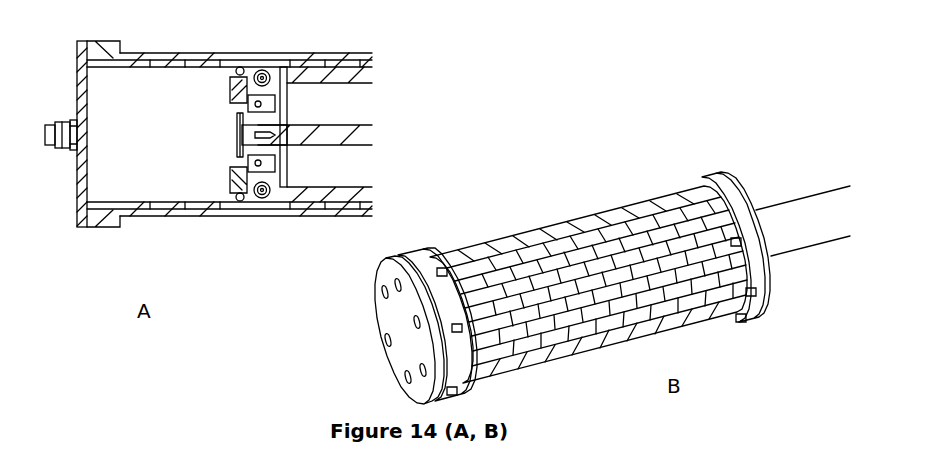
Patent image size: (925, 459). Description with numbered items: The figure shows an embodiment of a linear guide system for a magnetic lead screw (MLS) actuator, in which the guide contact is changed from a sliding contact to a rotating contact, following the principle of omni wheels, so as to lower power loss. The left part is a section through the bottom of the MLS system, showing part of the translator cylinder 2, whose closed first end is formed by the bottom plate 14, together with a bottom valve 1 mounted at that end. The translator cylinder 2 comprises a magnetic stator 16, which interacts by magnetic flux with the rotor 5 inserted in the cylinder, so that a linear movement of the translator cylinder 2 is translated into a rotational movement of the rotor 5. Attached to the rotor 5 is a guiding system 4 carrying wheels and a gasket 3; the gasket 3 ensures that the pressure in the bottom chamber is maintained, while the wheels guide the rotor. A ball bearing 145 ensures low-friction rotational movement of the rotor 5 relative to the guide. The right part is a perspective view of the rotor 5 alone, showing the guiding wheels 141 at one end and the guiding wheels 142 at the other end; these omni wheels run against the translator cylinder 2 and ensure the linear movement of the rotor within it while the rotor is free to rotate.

The bottom valve 1 is at (62, 153).
The translator cylinder 2 is at (155, 215).
The gasket 3 is at (238, 198).
The guiding system 4 is at (235, 113).
The rotor 5 is at (362, 77).
The bottom plate 14 is at (80, 102).
The magnetic stator 16 is at (195, 210).
The guiding wheels 141 is at (265, 73).
The guiding wheels 142 is at (743, 198).
The ball bearing 145 is at (258, 195).